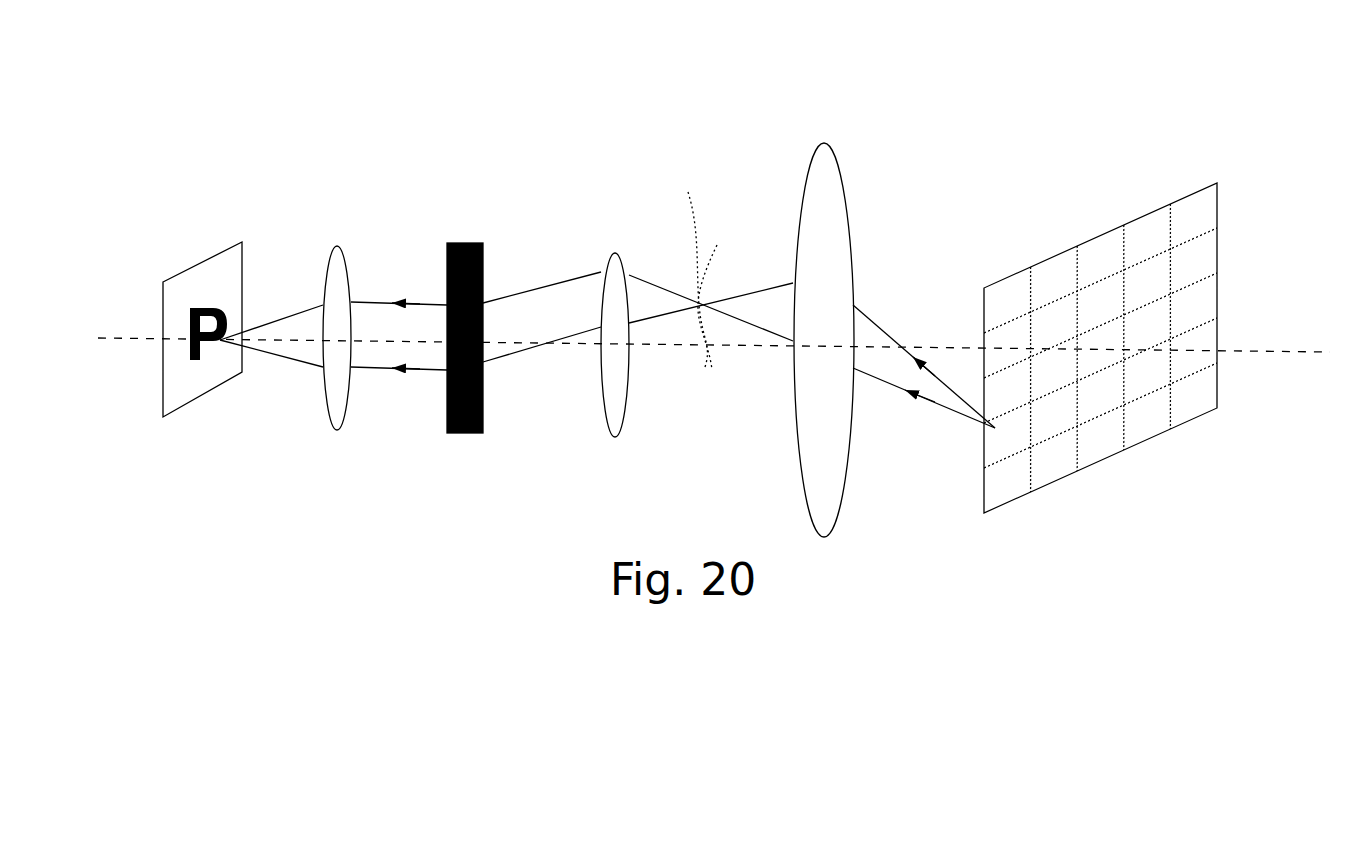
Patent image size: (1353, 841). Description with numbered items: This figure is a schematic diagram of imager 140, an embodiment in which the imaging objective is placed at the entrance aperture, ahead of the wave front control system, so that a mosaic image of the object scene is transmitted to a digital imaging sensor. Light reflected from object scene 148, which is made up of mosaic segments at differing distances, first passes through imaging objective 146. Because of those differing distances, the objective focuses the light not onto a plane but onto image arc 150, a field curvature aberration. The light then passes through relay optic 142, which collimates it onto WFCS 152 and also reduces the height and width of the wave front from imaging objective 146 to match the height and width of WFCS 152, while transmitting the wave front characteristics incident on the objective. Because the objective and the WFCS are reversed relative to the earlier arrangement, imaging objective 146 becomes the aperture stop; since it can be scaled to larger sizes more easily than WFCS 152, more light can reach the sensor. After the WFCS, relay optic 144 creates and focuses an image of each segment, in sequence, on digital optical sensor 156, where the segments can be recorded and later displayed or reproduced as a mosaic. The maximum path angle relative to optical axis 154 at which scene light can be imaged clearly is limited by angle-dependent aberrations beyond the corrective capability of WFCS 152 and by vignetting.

The imager 140 is at (528, 74).
The relay optic 142 is at (615, 253).
The relay optic 144 is at (337, 250).
The imaging objective 146 is at (805, 180).
The object scene 148 is at (1083, 242).
The image arc 150 is at (683, 274).
The WFCS 152 is at (462, 243).
The optical axis 154 is at (1255, 340).
The digital optical sensor 156 is at (192, 265).